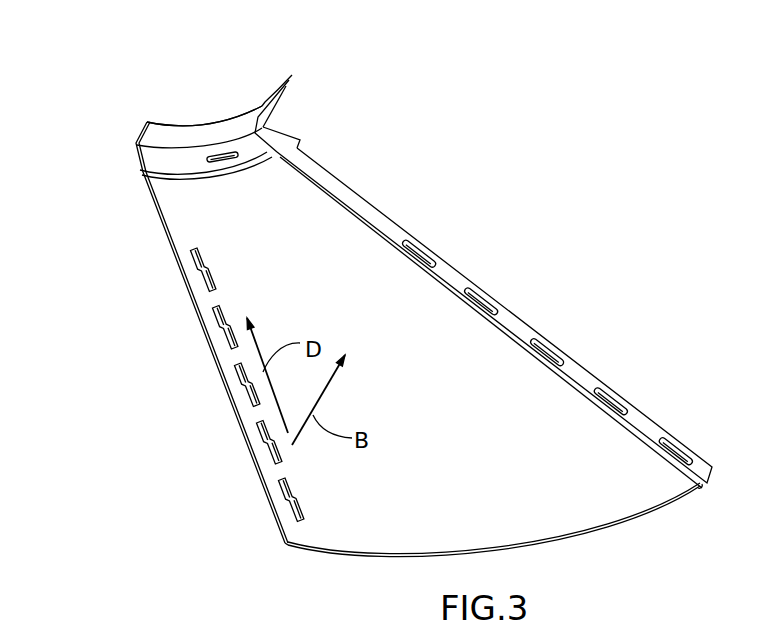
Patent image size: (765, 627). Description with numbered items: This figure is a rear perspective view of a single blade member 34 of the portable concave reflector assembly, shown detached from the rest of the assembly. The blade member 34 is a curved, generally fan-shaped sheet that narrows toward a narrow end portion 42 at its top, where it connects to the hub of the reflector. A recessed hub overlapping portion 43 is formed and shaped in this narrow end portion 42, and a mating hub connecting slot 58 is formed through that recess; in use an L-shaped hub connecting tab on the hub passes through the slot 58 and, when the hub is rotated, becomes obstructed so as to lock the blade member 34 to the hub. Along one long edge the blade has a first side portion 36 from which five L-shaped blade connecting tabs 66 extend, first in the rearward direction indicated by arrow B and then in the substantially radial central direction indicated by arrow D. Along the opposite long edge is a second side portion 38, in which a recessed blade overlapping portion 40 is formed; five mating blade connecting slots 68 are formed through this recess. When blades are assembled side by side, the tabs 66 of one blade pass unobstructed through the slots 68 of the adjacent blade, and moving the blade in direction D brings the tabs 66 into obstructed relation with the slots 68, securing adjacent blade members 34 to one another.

The blade member 34 is at (560, 512).
The first side portion 36 is at (255, 415).
The second side portion 38 is at (495, 345).
The recessed blade overlapping portion 40 is at (313, 168).
The narrow end portion 42 is at (205, 192).
The recessed hub overlapping portion 43 is at (190, 155).
The mating hub connecting slot 58 is at (222, 157).
The L-shaped blade connecting tab 66 is at (203, 279).
The mating blade connecting slot 68 is at (425, 250).